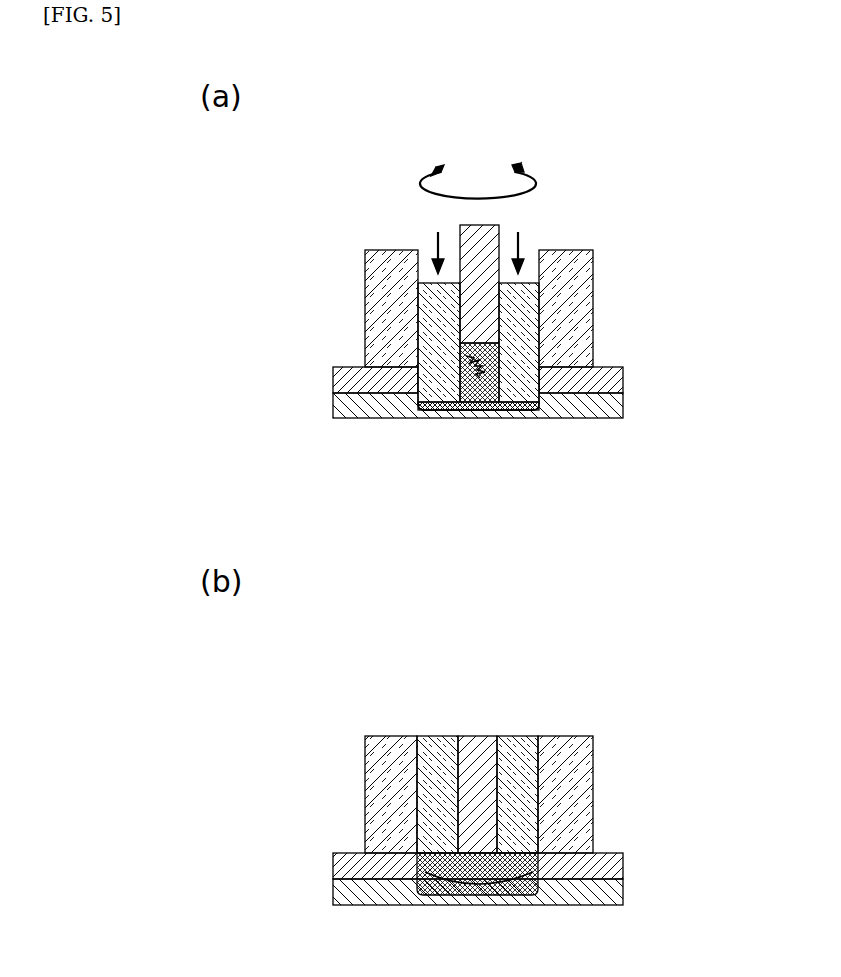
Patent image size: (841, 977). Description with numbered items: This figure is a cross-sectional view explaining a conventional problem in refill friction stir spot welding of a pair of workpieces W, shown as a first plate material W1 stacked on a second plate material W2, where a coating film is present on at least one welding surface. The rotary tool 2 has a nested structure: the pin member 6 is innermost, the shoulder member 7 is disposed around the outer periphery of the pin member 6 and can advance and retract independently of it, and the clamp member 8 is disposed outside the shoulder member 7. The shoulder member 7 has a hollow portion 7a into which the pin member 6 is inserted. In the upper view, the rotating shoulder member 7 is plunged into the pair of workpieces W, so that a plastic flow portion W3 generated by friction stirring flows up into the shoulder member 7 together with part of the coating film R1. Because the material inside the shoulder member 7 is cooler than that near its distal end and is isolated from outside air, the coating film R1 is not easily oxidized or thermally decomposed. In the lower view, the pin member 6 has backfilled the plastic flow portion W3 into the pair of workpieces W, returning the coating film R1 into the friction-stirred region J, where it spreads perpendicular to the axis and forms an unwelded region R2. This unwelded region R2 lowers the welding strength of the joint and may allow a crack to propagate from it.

The rotary tool 2 is at (494, 498).
The pin member 6 is at (482, 223).
The shoulder member 7 is at (443, 302).
The hollow portion 7a is at (497, 350).
The clamp member 8 is at (380, 343).
The pair of workpieces W is at (531, 642).
The first plate material W1 is at (623, 382).
The second plate material W2 is at (623, 403).
The plastic flow portion W3 is at (457, 415).
The coating film R1 is at (478, 415).
The unwelded region R2 is at (490, 893).
The friction-stirred region J is at (442, 893).